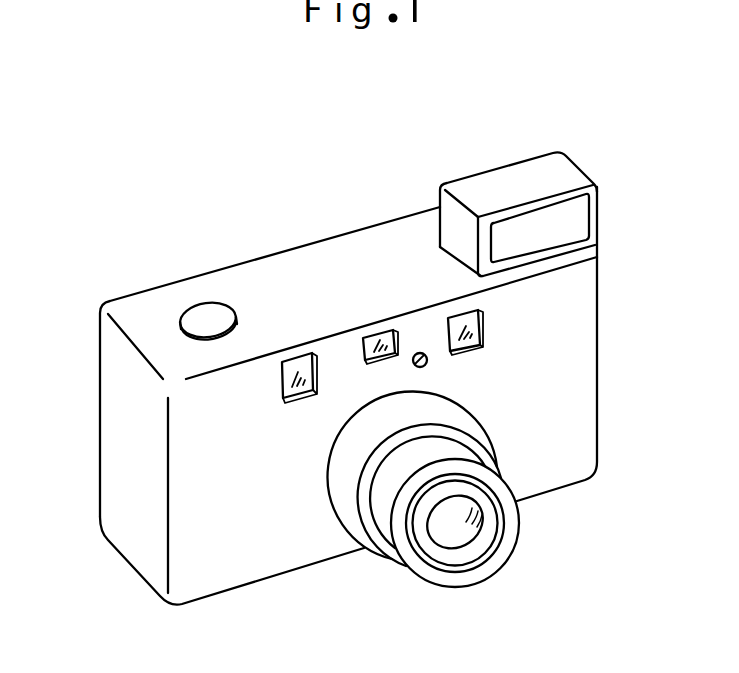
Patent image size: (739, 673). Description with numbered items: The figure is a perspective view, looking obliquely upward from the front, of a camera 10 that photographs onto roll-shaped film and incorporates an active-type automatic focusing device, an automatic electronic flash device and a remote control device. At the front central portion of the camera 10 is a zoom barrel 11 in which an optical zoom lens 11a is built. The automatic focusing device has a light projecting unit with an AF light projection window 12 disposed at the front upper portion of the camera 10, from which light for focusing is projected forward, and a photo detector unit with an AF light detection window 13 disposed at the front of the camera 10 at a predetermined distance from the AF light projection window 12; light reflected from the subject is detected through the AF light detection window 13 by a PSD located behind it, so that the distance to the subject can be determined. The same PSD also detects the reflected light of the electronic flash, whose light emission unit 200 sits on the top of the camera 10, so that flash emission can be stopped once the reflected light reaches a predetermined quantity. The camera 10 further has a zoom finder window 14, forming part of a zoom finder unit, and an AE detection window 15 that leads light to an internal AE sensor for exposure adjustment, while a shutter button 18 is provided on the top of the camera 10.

The camera 10 is at (137, 181).
The zoom barrel 11 is at (347, 494).
The optical zoom lens 11a is at (445, 527).
The AF light projection window 12 is at (456, 316).
The AF light detection window 13 is at (303, 357).
The zoom finder window 14 is at (374, 336).
The AE detection window 15 is at (421, 352).
The shutter button 18 is at (203, 312).
The light emission unit 200 is at (502, 177).